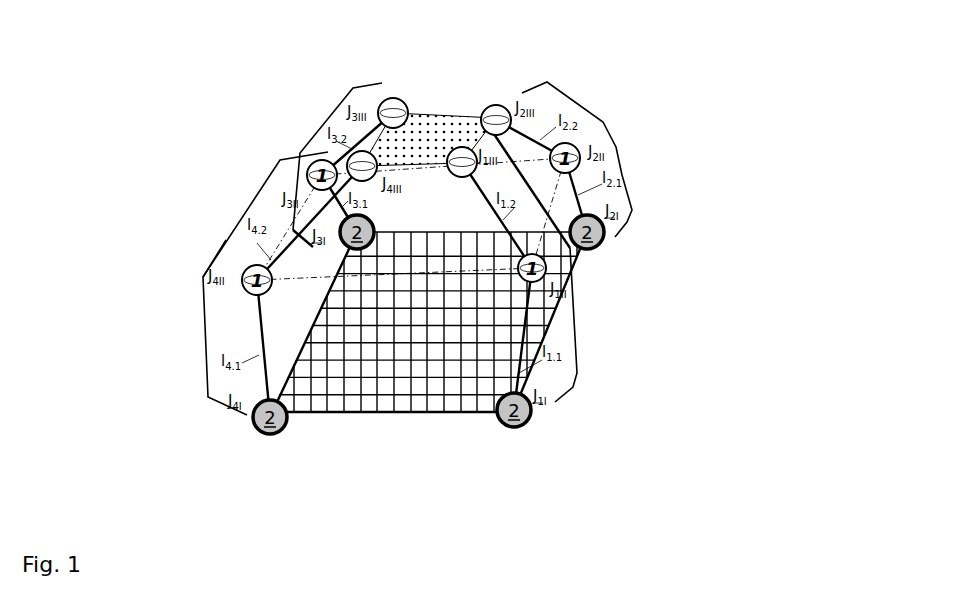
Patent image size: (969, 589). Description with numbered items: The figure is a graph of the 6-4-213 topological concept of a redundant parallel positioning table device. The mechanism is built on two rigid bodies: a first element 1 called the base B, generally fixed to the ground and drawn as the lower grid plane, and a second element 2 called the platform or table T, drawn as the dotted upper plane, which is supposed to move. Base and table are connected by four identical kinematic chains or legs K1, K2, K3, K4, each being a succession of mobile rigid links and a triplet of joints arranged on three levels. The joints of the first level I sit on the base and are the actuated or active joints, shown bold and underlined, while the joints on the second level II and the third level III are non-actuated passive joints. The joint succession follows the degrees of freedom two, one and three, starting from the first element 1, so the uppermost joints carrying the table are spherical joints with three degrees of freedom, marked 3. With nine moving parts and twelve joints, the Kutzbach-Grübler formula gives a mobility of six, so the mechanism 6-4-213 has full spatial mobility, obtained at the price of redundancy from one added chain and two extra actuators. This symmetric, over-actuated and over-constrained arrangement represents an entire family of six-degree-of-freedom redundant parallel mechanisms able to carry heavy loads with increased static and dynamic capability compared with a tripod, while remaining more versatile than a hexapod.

The first element 1 is at (372, 413).
The second element 2 is at (435, 132).
The spherical joint 3 is at (429, 139).
The table T is at (440, 72).
The base B is at (331, 446).
The kinematic chain K1 is at (617, 293).
The kinematic chain K2 is at (636, 92).
The kinematic chain K3 is at (278, 121).
The kinematic chain K4 is at (178, 250).
The first level I is at (658, 326).
The second level II is at (679, 211).
The third level III is at (676, 137).
The topological concept 6-4-213 is at (686, 390).